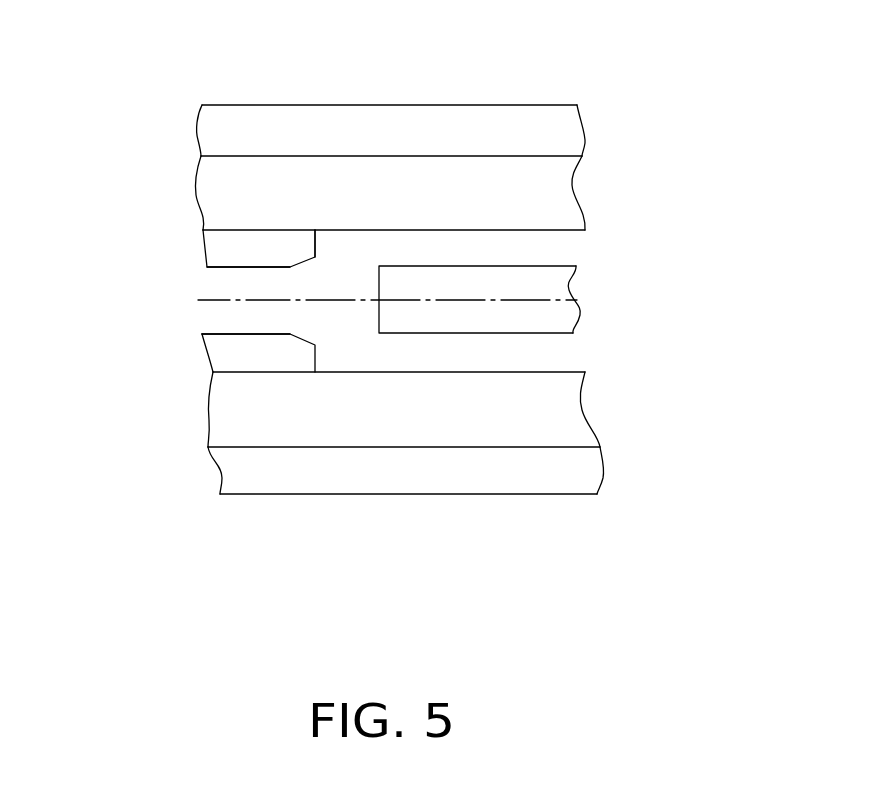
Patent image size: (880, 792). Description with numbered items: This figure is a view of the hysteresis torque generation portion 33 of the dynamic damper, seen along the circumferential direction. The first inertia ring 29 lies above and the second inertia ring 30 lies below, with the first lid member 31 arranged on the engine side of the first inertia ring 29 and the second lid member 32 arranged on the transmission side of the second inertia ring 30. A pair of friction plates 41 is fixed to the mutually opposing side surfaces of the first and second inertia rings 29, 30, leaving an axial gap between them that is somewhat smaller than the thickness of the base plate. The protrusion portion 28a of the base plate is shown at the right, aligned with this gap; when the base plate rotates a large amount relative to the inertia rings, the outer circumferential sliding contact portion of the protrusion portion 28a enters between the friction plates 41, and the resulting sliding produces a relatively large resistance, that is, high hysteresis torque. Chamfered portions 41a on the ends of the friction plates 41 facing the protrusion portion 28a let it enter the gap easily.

The protrusion portion 28a is at (553, 267).
The first inertia ring 29 is at (555, 178).
The second inertia ring 30 is at (563, 400).
The first lid member 31 is at (542, 122).
The second lid member 32 is at (560, 475).
The hysteresis torque generation portion 33 is at (335, 257).
The friction plate 41 is at (230, 243).
The chamfered portion 41a is at (305, 266).